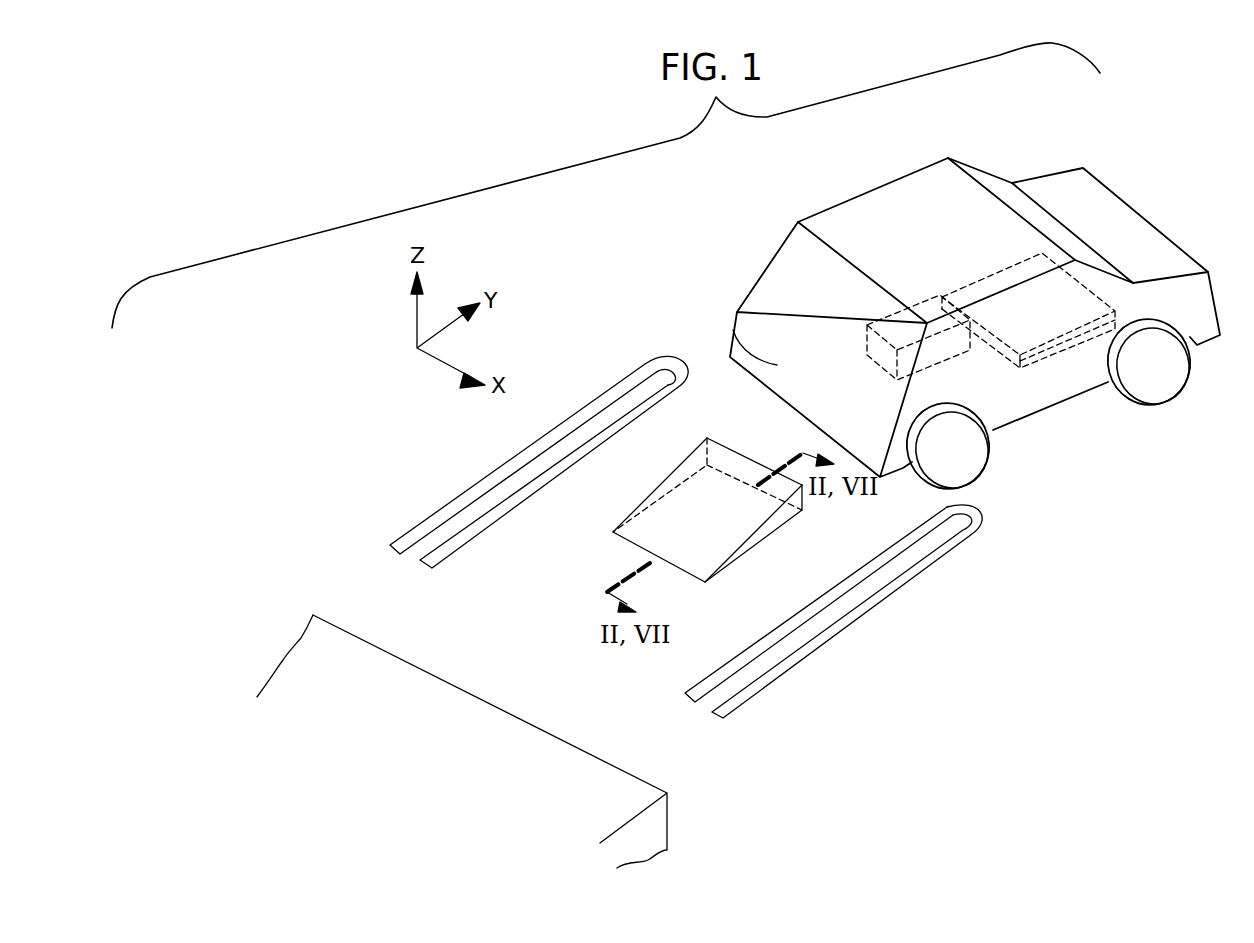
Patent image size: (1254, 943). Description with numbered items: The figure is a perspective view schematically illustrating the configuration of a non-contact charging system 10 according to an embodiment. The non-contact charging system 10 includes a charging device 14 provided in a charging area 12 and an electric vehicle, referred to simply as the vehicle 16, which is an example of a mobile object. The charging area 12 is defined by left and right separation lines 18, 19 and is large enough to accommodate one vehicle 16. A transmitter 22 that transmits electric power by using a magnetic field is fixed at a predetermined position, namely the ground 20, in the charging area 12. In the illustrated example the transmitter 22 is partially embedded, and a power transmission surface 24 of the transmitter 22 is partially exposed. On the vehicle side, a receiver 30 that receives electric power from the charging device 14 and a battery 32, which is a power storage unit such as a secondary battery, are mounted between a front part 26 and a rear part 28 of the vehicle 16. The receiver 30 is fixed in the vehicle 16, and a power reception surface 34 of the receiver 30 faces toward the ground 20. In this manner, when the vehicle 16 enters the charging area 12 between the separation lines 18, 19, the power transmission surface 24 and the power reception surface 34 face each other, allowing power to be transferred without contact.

The non-contact charging system 10 is at (596, 248).
The charging area 12 is at (539, 454).
The charging device 14 is at (541, 609).
The vehicle 16 is at (941, 315).
The left separation line 18 is at (532, 452).
The right separation line 19 is at (823, 634).
The ground 20 is at (833, 611).
The transmitter 22 is at (693, 490).
The power transmission surface 24 is at (672, 527).
The front part 26 is at (1103, 202).
The rear part 28 is at (733, 330).
The receiver 30 is at (1013, 282).
The battery 32 is at (927, 308).
The power reception surface 34 is at (1042, 363).